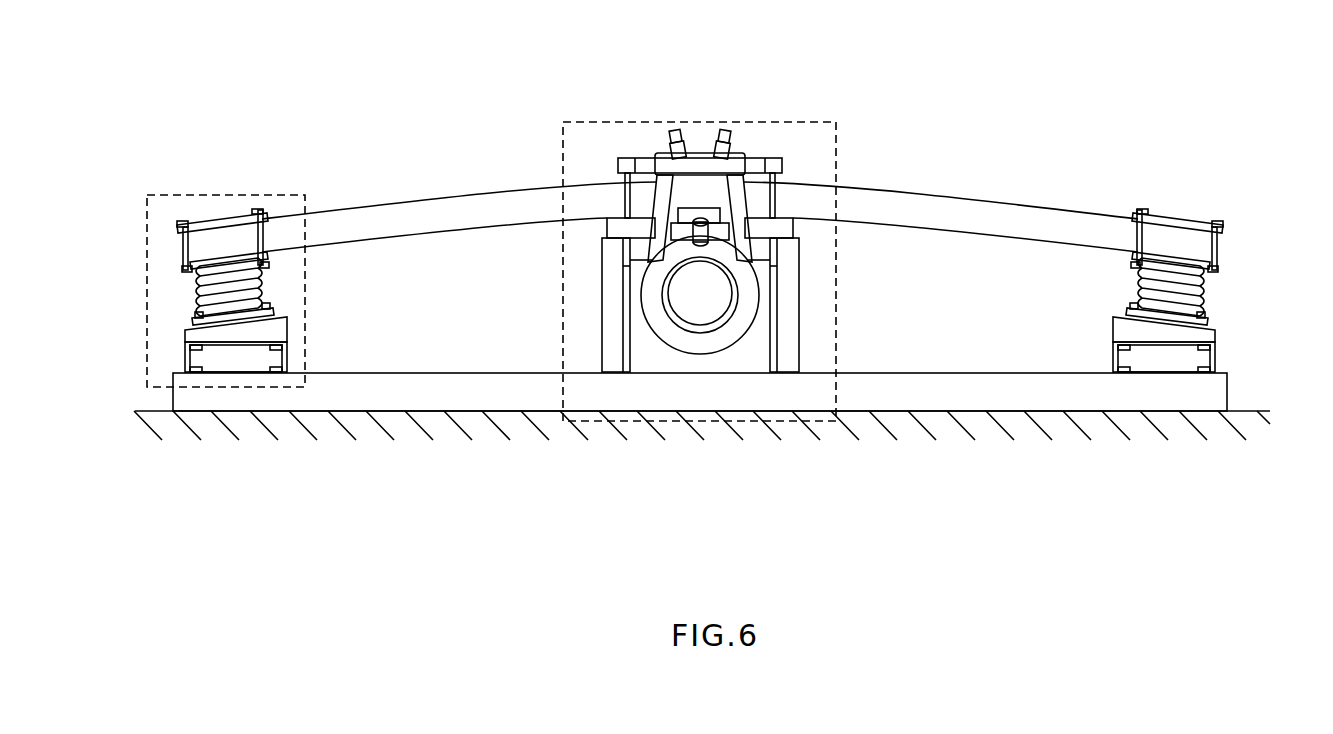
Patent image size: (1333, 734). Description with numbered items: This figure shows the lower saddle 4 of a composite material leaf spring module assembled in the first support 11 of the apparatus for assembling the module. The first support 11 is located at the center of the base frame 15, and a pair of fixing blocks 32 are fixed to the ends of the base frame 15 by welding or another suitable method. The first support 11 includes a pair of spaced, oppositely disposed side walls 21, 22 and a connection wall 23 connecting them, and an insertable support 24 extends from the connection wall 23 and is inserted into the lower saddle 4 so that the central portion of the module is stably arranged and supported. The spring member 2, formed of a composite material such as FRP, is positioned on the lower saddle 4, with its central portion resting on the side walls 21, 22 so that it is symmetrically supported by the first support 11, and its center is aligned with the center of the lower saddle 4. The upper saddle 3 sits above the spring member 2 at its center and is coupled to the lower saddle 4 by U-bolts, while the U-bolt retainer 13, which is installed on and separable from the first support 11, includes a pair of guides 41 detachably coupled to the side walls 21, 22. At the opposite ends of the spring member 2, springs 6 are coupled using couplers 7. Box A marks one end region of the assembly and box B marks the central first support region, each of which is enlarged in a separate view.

The spring member 2 is at (958, 198).
The upper saddle 3 is at (697, 158).
The lower saddle 4 is at (692, 342).
The springs 6 is at (197, 293).
The couplers 7 is at (1186, 200).
The first support 11 is at (820, 310).
The U-bolt retainer 13 is at (815, 233).
The base frame 15 is at (480, 393).
The side wall 21 is at (622, 348).
The side wall 22 is at (778, 348).
The connection wall 23 is at (728, 360).
The insertable support 24 is at (667, 298).
The fixing blocks 32 is at (1112, 350).
The guides 41 is at (622, 228).
The box A is at (225, 185).
The box B is at (777, 112).